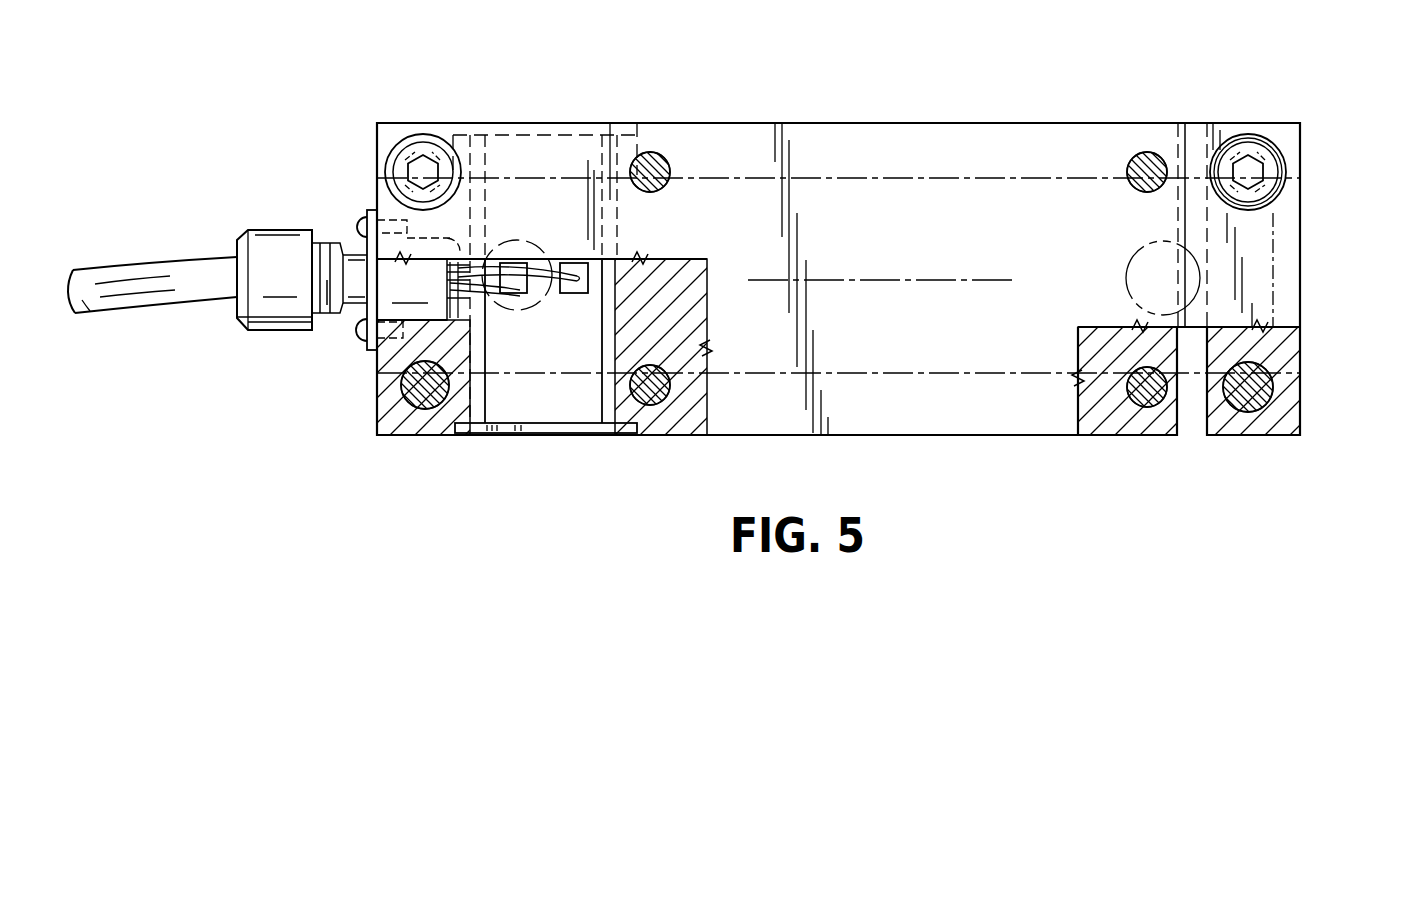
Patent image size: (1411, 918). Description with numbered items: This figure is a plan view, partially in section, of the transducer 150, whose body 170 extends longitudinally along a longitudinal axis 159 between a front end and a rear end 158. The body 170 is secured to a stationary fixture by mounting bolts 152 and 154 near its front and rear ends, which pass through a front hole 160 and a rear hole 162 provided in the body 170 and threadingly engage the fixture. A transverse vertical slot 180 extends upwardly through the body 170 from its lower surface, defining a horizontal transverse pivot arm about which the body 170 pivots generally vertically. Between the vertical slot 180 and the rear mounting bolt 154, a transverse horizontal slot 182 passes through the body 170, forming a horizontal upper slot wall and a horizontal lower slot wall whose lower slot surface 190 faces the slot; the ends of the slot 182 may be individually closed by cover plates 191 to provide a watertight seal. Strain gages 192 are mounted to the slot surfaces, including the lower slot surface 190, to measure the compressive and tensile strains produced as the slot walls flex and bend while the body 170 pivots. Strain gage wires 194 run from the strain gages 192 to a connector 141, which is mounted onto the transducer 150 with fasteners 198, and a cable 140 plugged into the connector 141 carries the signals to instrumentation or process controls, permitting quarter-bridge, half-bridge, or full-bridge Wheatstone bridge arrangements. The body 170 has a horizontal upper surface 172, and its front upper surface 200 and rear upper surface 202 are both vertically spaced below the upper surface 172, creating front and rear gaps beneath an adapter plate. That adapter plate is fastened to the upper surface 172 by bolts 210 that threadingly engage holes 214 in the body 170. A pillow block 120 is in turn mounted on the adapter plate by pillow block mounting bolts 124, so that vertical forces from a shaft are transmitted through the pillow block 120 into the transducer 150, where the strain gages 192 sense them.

The pillow block 120 is at (1283, 237).
The pillow block mounting bolts 124 is at (1148, 245).
The cable 140 is at (160, 295).
The connector 141 is at (357, 250).
The transducer 150 is at (528, 473).
The mounting bolt 152 is at (1255, 138).
The mounting bolt 154 is at (426, 142).
The rear end 158 is at (377, 425).
The longitudinal axis 159 is at (893, 280).
The front hole 160 is at (1290, 168).
The rear hole 162 is at (400, 130).
The body 170 is at (912, 118).
The upper surface 172 is at (815, 132).
The transverse vertical slot 180 is at (1192, 123).
The transverse horizontal slot 182 is at (593, 318).
The lower slot surface 190 is at (517, 405).
The cover plates 191 is at (568, 125).
The strain gages 192 is at (567, 293).
The strain gage wires 194 is at (545, 262).
The fasteners 198 is at (363, 222).
The front upper surface 200 is at (1285, 290).
The rear upper surface 202 is at (540, 140).
The bolts 210 is at (658, 160).
The holes 214 is at (653, 150).